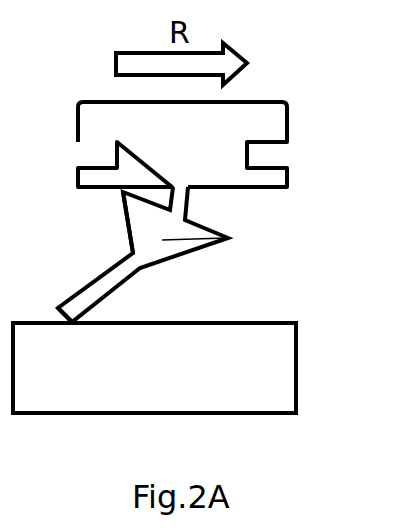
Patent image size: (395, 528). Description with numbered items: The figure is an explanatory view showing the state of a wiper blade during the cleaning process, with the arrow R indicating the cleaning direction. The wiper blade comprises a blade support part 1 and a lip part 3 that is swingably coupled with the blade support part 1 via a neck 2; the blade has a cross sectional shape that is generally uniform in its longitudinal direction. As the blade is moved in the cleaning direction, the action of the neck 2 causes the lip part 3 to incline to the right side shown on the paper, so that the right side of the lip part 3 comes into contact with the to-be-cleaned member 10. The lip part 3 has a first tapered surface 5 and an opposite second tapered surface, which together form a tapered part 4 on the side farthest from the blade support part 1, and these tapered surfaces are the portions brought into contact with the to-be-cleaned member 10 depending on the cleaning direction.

The blade support part 1 is at (197, 142).
The neck 2 is at (183, 205).
The lip part 3 is at (228, 238).
The tapered part 4 is at (127, 233).
The first tapered surface 5 is at (103, 305).
The to-be-cleaned member 10 is at (188, 388).